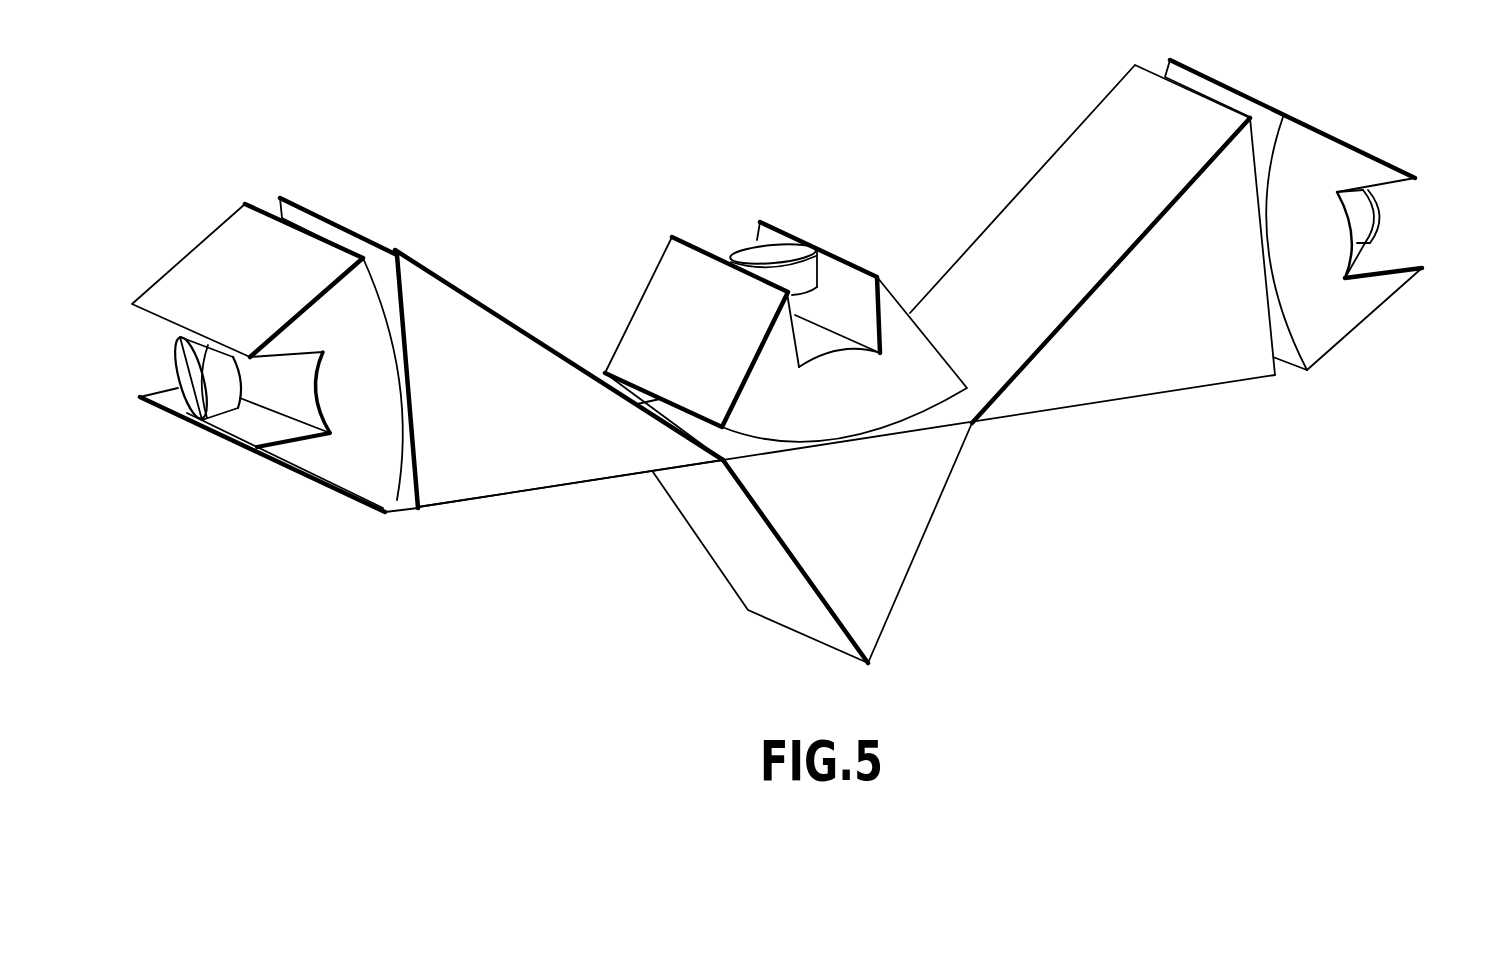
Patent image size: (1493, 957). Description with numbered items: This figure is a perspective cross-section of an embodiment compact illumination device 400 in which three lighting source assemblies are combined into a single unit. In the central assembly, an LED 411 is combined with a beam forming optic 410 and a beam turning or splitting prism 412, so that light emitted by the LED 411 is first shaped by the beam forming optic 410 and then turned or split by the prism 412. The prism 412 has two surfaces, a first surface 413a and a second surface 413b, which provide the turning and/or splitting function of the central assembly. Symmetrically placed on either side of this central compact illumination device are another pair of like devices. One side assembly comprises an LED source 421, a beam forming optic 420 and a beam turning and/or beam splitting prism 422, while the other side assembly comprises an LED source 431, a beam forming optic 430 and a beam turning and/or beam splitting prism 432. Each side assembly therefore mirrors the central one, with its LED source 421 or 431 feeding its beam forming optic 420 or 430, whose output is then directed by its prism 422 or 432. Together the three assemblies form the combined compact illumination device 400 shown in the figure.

The compact illumination device 400 is at (776, 361).
The beam forming optic 410 is at (879, 420).
The LED 411 is at (777, 252).
The beam turning or splitting prism 412 is at (877, 522).
The surface 413a is at (912, 563).
The surface 413b is at (731, 532).
The beam forming optic 420 is at (1323, 155).
The LED source 421 is at (1378, 216).
The beam turning and/or beam splitting prism 422 is at (1195, 320).
The beam forming optic 430 is at (326, 288).
The LED source 431 is at (187, 374).
The beam turning and/or beam splitting prism 432 is at (502, 405).